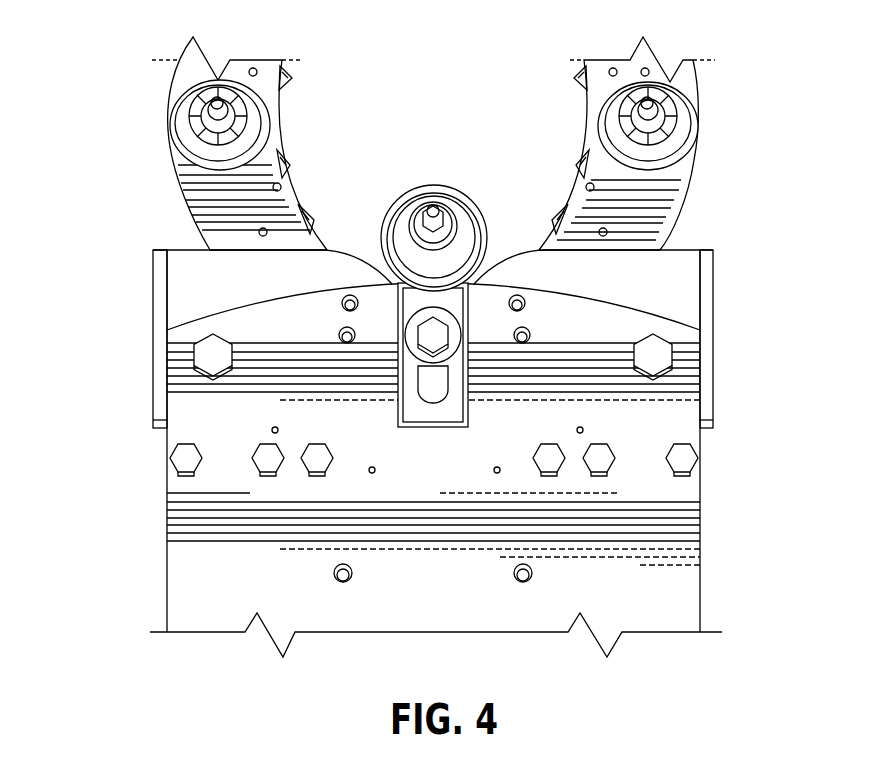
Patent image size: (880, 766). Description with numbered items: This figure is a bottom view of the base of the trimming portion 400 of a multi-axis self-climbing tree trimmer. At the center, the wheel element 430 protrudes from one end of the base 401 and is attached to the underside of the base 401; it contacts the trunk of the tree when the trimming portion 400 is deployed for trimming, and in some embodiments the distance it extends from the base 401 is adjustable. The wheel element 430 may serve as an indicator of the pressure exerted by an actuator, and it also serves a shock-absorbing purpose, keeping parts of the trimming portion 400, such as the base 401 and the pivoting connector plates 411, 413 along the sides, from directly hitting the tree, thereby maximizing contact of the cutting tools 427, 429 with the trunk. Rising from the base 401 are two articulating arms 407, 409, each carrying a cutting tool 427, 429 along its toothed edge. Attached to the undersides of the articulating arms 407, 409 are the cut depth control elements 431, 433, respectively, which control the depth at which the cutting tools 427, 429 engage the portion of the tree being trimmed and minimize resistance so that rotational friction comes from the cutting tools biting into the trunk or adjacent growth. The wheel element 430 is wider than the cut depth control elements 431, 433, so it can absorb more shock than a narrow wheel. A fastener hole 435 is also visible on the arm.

The trimming portion 400 is at (118, 38).
The base 401 is at (688, 595).
The articulating arm 407 is at (200, 210).
The articulating arm 409 is at (675, 188).
The pivoting connector plate 411 is at (165, 283).
The pivoting connector plate 413 is at (705, 318).
The cutting tool 427 is at (290, 82).
The cutting tool 429 is at (583, 80).
The wheel element 430 is at (433, 184).
The cut depth control element 431 is at (178, 118).
The cut depth control element 433 is at (695, 118).
The fastener hole 435 is at (257, 230).